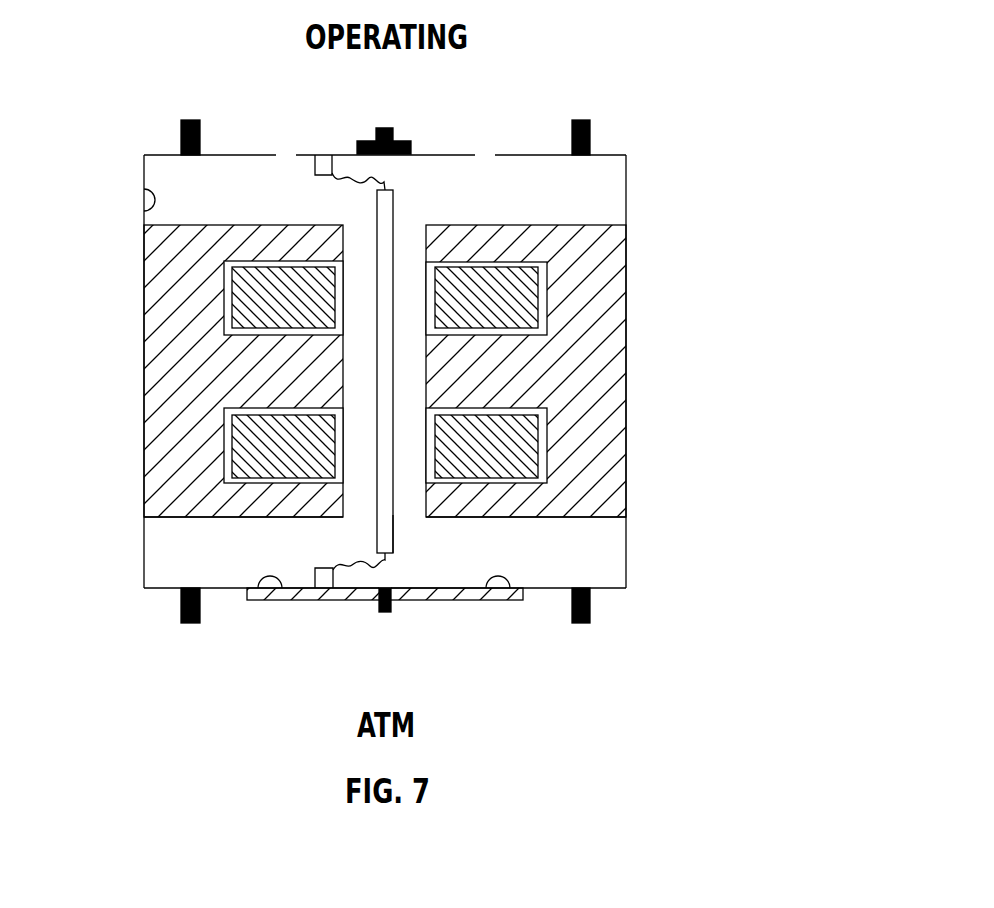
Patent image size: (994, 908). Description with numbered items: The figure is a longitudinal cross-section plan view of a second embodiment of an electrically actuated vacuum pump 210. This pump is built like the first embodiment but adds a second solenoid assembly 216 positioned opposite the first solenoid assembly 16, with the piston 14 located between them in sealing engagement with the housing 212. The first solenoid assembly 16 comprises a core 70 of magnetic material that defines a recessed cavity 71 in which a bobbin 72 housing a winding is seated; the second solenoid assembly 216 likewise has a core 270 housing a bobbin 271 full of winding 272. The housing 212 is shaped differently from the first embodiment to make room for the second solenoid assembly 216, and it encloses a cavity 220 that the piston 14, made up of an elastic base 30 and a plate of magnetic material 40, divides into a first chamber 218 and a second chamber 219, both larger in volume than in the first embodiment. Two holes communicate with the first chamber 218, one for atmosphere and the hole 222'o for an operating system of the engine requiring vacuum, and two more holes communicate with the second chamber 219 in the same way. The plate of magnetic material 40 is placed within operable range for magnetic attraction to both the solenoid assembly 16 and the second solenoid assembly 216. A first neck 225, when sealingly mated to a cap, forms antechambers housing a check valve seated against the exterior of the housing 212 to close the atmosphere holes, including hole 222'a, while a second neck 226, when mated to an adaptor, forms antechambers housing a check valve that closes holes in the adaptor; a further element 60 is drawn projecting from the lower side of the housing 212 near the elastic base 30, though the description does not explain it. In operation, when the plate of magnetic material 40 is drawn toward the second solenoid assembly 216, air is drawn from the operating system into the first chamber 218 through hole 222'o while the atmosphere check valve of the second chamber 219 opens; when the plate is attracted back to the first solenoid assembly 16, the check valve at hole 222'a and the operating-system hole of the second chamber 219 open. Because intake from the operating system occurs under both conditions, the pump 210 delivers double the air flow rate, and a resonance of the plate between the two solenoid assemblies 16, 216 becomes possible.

The vacuum pump 210 is at (730, 62).
The solenoid assembly 16 is at (598, 210).
The piston 14 is at (410, 210).
The elastic base 30 is at (352, 565).
The plate of magnetic material 40 is at (395, 522).
The lower terminal 60 is at (395, 605).
The core 70 is at (607, 297).
The cavity 71 is at (540, 305).
The bobbin 72 is at (533, 452).
The housing 212 is at (628, 555).
The second solenoid assembly 216 is at (168, 530).
The first chamber 218 is at (600, 550).
The second chamber 219 is at (185, 572).
The cavity 220 is at (144, 212).
The first neck 225 is at (592, 612).
The second neck 226 is at (592, 133).
The core 270 is at (148, 347).
The bobbin 271 is at (230, 300).
The winding 272 is at (248, 455).
The hole 222'o is at (529, 118).
The hole 222'a is at (457, 631).